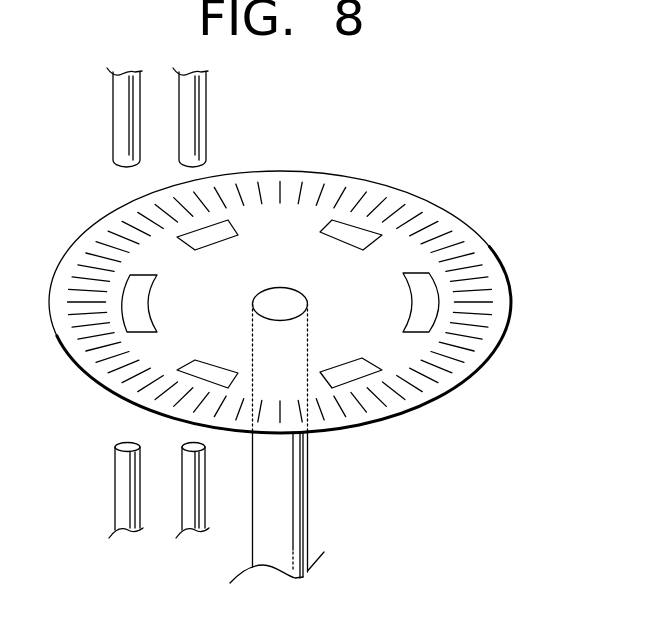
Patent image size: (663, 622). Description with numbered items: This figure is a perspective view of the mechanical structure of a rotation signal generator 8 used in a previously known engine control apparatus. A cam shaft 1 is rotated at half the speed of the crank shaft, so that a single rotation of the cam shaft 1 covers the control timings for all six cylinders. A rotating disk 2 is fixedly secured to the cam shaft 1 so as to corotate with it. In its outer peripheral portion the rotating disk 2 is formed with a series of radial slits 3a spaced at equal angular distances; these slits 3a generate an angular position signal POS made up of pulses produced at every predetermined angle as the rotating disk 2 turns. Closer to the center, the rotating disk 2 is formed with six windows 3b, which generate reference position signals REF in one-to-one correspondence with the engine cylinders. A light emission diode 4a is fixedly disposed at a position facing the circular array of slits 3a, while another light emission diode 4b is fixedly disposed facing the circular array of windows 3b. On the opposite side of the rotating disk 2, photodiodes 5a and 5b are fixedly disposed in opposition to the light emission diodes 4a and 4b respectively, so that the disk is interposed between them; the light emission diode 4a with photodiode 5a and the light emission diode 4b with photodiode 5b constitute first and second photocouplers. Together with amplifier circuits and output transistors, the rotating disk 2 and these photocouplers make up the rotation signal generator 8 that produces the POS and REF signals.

The cam shaft 1 is at (310, 498).
The rotating disk 2 is at (500, 256).
The radial slits 3a is at (443, 388).
The windows 3b is at (412, 298).
The light emission diode 4a is at (120, 130).
The light emission diode 4b is at (202, 102).
The photodiode 5a is at (116, 497).
The photodiode 5b is at (205, 497).
The rotation signal generator 8 is at (34, 431).